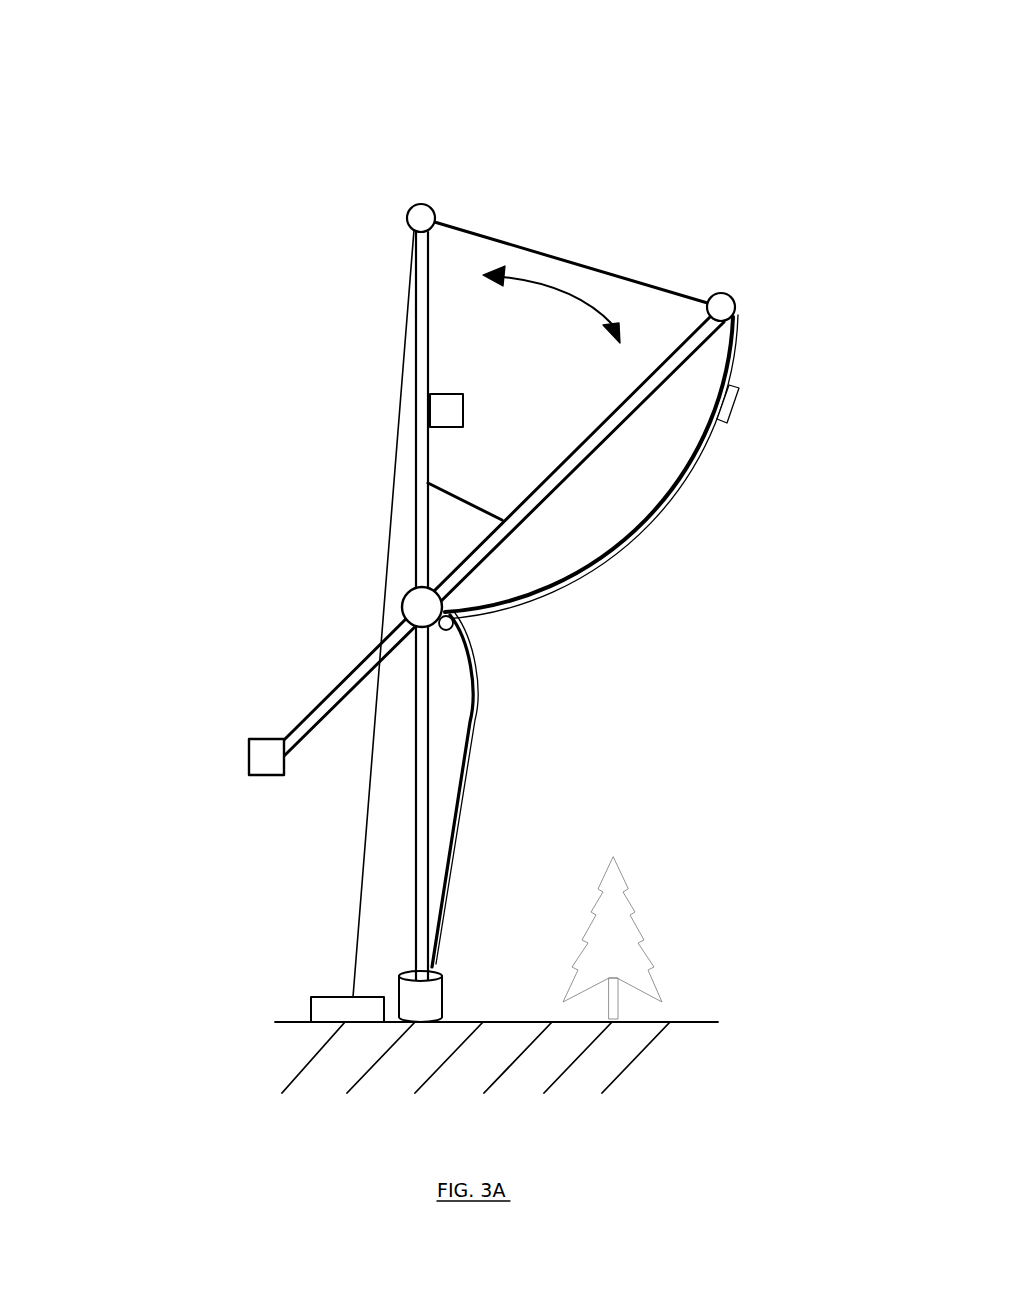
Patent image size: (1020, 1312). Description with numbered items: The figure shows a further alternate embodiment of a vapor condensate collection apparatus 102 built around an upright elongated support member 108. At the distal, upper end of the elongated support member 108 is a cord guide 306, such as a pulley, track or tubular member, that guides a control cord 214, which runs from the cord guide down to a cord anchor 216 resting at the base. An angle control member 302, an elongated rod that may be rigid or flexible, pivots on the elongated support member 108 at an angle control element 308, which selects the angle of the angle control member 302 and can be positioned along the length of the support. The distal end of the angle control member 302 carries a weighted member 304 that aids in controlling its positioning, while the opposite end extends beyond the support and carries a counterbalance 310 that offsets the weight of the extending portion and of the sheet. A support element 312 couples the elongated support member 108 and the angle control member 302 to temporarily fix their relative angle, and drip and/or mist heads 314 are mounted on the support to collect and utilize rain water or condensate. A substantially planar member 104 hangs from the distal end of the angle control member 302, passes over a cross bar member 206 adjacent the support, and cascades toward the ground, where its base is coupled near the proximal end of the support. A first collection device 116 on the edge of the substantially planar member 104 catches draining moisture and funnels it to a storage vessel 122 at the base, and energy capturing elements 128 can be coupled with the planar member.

The vapor condensate collection apparatus 102 is at (600, 88).
The substantially planar member 104 is at (613, 550).
The elongated support member 108 is at (428, 830).
The first collection device 116 is at (700, 465).
The storage vessel 122 is at (437, 993).
The energy capturing element 128 is at (740, 404).
The cross bar member 206 is at (455, 630).
The control cord 214 is at (612, 260).
The cord anchor 216 is at (295, 1000).
The angle control member 302 is at (317, 732).
The weighted member 304 is at (738, 300).
The cord guide 306 is at (410, 213).
The angle control element 308 is at (403, 610).
The counterbalance 310 is at (238, 763).
The support element 312 is at (452, 504).
The drip and/or mist heads 314 is at (445, 409).